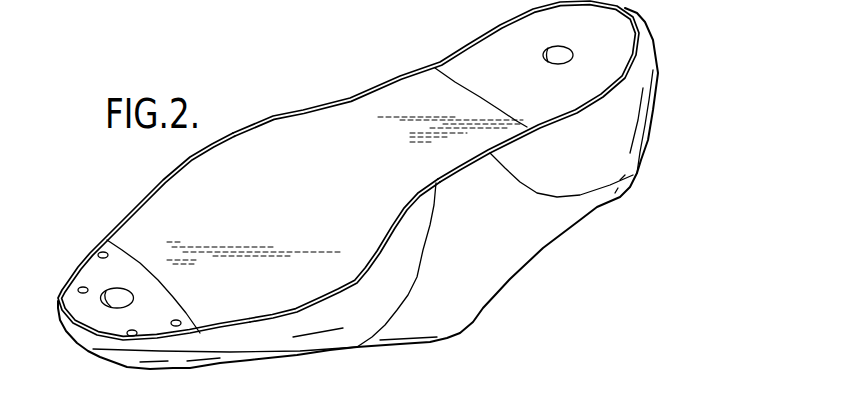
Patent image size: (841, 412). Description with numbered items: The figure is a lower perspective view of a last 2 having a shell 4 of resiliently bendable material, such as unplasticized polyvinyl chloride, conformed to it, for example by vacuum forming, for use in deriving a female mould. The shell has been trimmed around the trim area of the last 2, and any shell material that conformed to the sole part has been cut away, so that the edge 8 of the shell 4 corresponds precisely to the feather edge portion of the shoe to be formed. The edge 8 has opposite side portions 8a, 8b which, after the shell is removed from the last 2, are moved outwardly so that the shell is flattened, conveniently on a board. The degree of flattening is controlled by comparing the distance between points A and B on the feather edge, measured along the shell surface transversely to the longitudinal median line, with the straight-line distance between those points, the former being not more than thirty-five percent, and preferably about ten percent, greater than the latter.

The last 2 is at (303, 130).
The shell 4 is at (470, 280).
The edge of the shell 8 is at (127, 212).
The side portion of the shell edge 8a is at (252, 129).
The side portion of the shell edge 8b is at (320, 300).
The point A on the feather edge A is at (275, 315).
The point B on the feather edge B is at (166, 181).